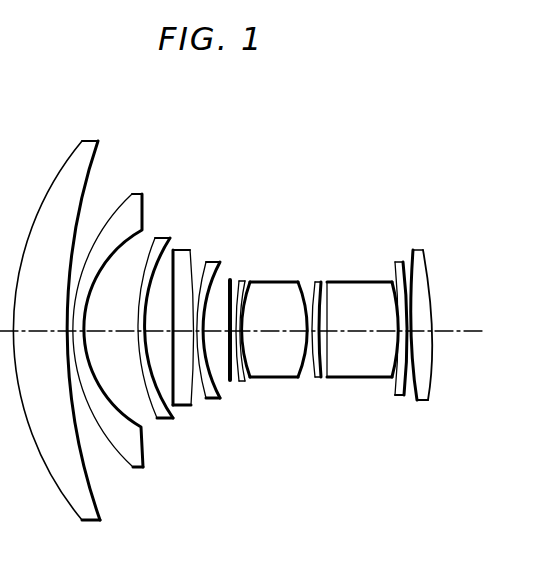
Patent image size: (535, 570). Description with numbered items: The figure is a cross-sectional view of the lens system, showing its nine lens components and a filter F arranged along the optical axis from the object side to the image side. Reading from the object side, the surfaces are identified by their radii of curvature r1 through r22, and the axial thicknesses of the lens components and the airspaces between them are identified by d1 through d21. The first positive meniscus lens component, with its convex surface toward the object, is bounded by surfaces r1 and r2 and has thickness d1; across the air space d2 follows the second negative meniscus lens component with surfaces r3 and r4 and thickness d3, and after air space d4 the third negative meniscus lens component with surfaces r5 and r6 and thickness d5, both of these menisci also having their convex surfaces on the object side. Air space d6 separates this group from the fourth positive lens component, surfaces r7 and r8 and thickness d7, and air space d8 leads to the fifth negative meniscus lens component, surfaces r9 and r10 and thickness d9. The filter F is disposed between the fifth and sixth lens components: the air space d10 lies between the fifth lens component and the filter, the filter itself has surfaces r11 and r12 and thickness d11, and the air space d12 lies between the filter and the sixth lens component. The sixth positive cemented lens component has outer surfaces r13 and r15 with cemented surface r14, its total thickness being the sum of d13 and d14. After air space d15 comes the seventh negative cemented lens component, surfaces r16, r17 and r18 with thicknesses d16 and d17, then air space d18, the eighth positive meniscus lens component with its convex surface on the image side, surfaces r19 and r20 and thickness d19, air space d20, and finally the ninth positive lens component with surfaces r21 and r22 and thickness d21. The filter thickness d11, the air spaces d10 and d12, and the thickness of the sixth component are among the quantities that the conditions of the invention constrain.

The radius of curvature of first lens surface r1 is at (72, 518).
The radius of curvature of second lens surface r2 is at (102, 521).
The radius of curvature of third lens surface r3 is at (122, 464).
The radius of curvature of fourth lens surface r4 is at (147, 468).
The radius of curvature of fifth lens surface r5 is at (153, 420).
The radius of curvature of sixth lens surface r6 is at (173, 420).
The radius of curvature of seventh lens surface r7 is at (183, 406).
The radius of curvature of eighth lens surface r8 is at (192, 406).
The radius of curvature of ninth lens surface r9 is at (199, 398).
The radius of curvature of tenth lens surface r10 is at (209, 397).
The radius of curvature of eleventh surface r11 is at (238, 383).
The radius of curvature of twelfth surface r12 is at (246, 383).
The radius of curvature of thirteenth lens surface r13 is at (250, 378).
The radius of curvature of fourteenth lens surface r14 is at (290, 378).
The radius of curvature of fifteenth lens surface r15 is at (305, 378).
The radius of curvature of sixteenth lens surface r16 is at (320, 378).
The radius of curvature of seventeenth lens surface r17 is at (355, 378).
The radius of curvature of eighteenth lens surface r18 is at (380, 378).
The radius of curvature of nineteenth lens surface r19 is at (400, 396).
The radius of curvature of twentieth lens surface r20 is at (407, 396).
The radius of curvature of twenty-first lens surface r21 is at (421, 401).
The radius of curvature of twenty-second lens surface r22 is at (428, 399).
The thickness of first lens component d1 is at (24, 328).
The airspace between first and second lens components d2 is at (66, 329).
The thickness of second lens component d3 is at (78, 329).
The airspace between second and third lens components d4 is at (111, 328).
The thickness of third lens component d5 is at (139, 328).
The airspace between third and fourth lens components d6 is at (155, 329).
The thickness of fourth lens component d7 is at (178, 328).
The airspace between fourth and fifth lens components d8 is at (194, 328).
The thickness of fifth lens component d9 is at (199, 328).
The airspace between fifth lens component and filter d10 is at (213, 329).
The thickness of filter d11 is at (238, 328).
The airspace between filter and sixth lens component d12 is at (246, 328).
The thickness of first element of sixth lens component d13 is at (248, 328).
The thickness of second element of sixth lens component d14 is at (290, 328).
The airspace between sixth and seventh lens components d15 is at (314, 300).
The thickness of first element of seventh lens component d16 is at (338, 328).
The thickness of second element of seventh lens component d17 is at (380, 326).
The airspace between seventh and eighth lens components d18 is at (390, 328).
The thickness of eighth lens component d19 is at (399, 262).
The airspace between eighth and ninth lens components d20 is at (420, 326).
The thickness of ninth lens component d21 is at (432, 328).
The filter F is at (230, 280).